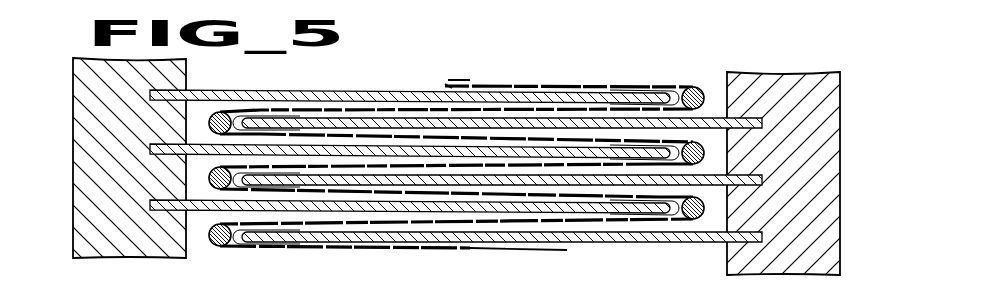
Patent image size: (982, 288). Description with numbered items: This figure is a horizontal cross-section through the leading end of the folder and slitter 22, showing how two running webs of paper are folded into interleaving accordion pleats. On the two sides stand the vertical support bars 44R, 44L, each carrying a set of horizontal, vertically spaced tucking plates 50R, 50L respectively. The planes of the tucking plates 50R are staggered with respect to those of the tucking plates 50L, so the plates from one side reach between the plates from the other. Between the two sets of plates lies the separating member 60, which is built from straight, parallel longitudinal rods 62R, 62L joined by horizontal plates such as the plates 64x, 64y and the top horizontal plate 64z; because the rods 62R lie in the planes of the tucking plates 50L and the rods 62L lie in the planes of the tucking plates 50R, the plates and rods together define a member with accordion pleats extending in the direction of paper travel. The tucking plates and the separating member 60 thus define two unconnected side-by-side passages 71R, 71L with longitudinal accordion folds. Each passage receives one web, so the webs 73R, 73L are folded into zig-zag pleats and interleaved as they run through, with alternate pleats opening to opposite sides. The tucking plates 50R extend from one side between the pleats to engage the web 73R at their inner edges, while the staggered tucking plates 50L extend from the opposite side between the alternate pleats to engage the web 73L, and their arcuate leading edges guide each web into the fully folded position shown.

The folder and slitter 22 is at (586, 59).
The vertical support bar 44R is at (78, 68).
The vertical support bar 44L is at (836, 88).
The tucking plates 50R is at (186, 146).
The tucking plates 50L is at (762, 177).
The separating member 60 is at (706, 64).
The rods 62R is at (212, 131).
The rods 62L is at (704, 98).
The horizontal plate 64x is at (277, 132).
The horizontal plate 64y is at (332, 112).
The top horizontal plate 64z is at (488, 83).
The passage 71L is at (235, 117).
The passage 71R is at (705, 150).
The web 73R is at (418, 84).
The web 73L is at (455, 80).